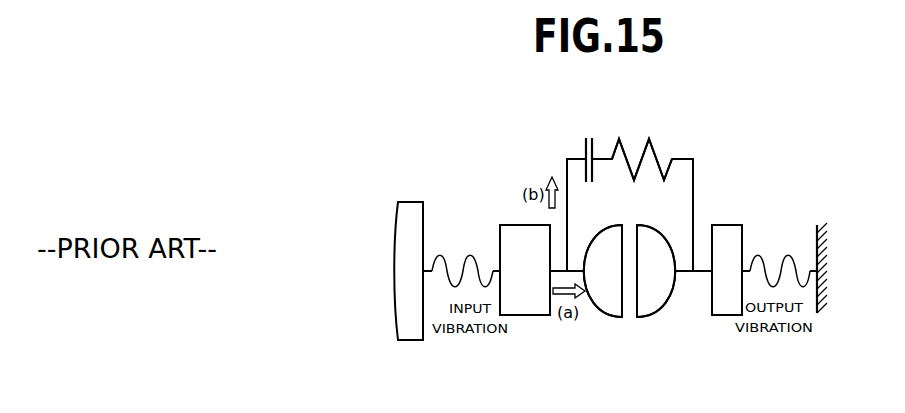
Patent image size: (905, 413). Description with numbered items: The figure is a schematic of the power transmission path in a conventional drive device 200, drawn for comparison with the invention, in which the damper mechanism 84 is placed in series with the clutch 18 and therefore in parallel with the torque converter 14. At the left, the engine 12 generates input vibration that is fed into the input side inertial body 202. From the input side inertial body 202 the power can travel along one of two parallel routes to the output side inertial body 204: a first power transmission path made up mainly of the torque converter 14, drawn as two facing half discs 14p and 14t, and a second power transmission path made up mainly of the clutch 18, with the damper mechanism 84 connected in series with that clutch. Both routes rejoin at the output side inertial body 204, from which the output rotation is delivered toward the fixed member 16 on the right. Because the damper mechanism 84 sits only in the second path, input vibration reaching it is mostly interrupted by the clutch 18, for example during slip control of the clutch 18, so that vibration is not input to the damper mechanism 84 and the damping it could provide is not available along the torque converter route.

The engine 12 is at (413, 333).
The torque converter 14 is at (628, 327).
The first half disc of rotor 14p is at (593, 243).
The second half disc of rotor 14t is at (661, 297).
The output-side fixed wall 16 is at (828, 300).
The clutch 18 is at (584, 151).
The damper mechanism 84 is at (653, 152).
The conventional drive device 200 is at (753, 127).
The input side inertial body 202 is at (525, 233).
The output side inertial body 204 is at (727, 228).